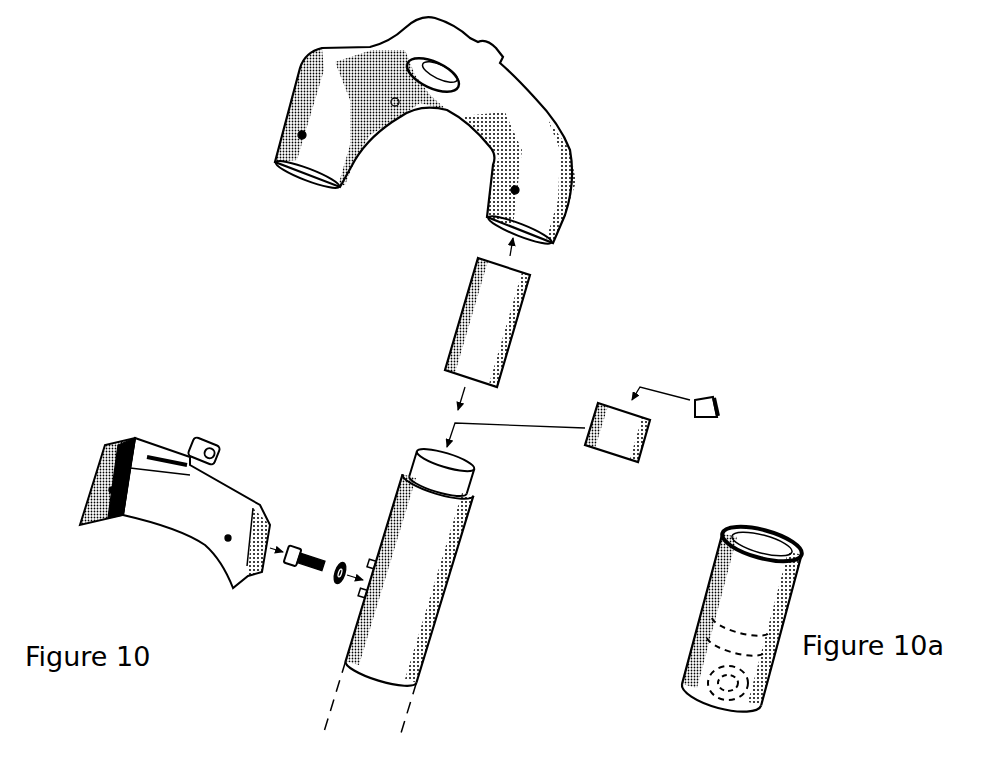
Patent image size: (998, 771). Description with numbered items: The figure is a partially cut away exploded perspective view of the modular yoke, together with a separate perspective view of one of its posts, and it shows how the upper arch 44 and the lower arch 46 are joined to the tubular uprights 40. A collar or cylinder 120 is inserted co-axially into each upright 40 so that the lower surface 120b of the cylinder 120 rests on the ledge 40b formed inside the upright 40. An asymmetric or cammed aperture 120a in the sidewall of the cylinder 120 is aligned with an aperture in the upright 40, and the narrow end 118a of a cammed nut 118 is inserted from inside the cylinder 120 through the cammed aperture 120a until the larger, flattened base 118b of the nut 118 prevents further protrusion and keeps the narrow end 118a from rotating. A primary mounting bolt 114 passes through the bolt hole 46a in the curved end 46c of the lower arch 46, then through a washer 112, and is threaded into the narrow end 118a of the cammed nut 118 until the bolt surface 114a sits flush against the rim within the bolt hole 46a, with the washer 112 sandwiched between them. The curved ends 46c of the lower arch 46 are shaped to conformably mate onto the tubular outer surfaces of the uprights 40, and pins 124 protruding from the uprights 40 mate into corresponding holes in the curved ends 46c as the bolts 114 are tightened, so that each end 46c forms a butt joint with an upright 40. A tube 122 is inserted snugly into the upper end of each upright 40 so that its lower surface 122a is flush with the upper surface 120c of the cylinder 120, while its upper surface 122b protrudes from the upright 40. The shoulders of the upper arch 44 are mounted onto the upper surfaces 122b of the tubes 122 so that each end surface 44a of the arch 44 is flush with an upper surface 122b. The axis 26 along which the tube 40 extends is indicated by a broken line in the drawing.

In FIG. 10, the longitudinal axis 26 is at (325, 708).
In FIG. 10, the upright 40 is at (440, 607).
In FIG. 10A, the upright 40 is at (803, 550).
In FIG. 10A, the ledge 40b is at (700, 633).
In FIG. 10, the upper arch 44 is at (523, 83).
In FIG. 10, the end surface of arch 44a is at (548, 242).
In FIG. 10, the lower arch 46 is at (165, 445).
In FIG. 10, the bolt hole 46a is at (128, 510).
In FIG. 10, the curved end 46c is at (103, 443).
In FIG. 10, the washer 112 is at (337, 582).
In FIG. 10, the primary mounting bolt 114 is at (287, 562).
In FIG. 10, the bolt surface 114a is at (296, 550).
In FIG. 10, the cammed nut 118 is at (717, 415).
In FIG. 10, the narrow end of nut 118a is at (703, 398).
In FIG. 10, the base of nut 118b is at (717, 400).
In FIG. 10, the cylinder 120 is at (625, 435).
In FIG. 10, the cammed aperture 120a is at (593, 427).
In FIG. 10, the lower surface of cylinder 120b is at (615, 460).
In FIG. 10, the upper surface of cylinder 120c is at (610, 402).
In FIG. 10, the tube 122 is at (522, 320).
In FIG. 10, the lower surface of tube 122a is at (443, 372).
In FIG. 10, the upper surface of tube 122b is at (490, 258).
In FIG. 10, the pin 124 is at (368, 563).